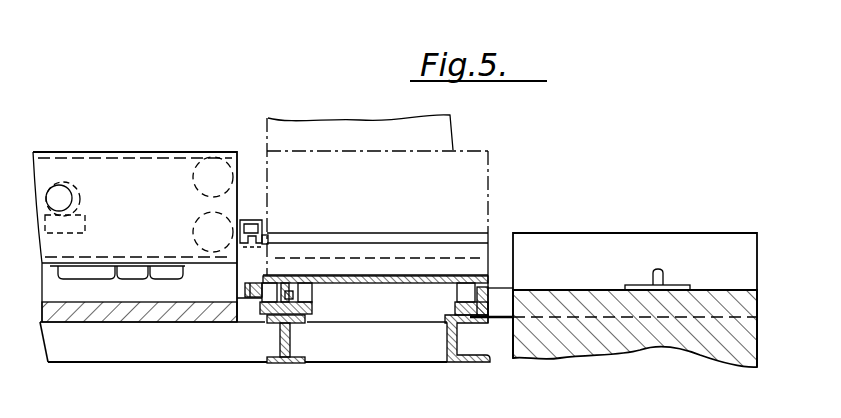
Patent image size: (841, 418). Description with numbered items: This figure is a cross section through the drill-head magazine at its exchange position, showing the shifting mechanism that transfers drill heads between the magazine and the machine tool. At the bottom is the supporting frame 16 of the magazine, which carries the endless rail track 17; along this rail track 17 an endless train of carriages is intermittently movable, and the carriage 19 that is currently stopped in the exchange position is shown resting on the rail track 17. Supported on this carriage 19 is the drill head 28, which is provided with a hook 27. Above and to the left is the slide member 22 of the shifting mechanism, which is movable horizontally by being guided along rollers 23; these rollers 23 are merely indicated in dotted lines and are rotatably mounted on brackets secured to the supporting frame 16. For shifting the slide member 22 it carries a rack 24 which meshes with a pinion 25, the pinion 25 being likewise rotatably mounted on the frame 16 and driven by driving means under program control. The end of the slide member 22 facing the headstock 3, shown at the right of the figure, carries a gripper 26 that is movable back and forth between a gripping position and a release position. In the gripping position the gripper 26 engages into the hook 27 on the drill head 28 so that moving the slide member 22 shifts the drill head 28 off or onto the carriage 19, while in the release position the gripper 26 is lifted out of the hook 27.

The headstock 3 is at (652, 348).
The supporting frame 16 is at (143, 357).
The endless rail track 17 is at (450, 308).
The carriage 19 is at (390, 284).
The slide member 22 is at (167, 166).
The rollers 23 is at (197, 194).
The rack 24 is at (89, 222).
The pinion 25 is at (72, 195).
The gripper 26 is at (250, 222).
The hook 27 is at (257, 247).
The drill head 28 is at (457, 198).